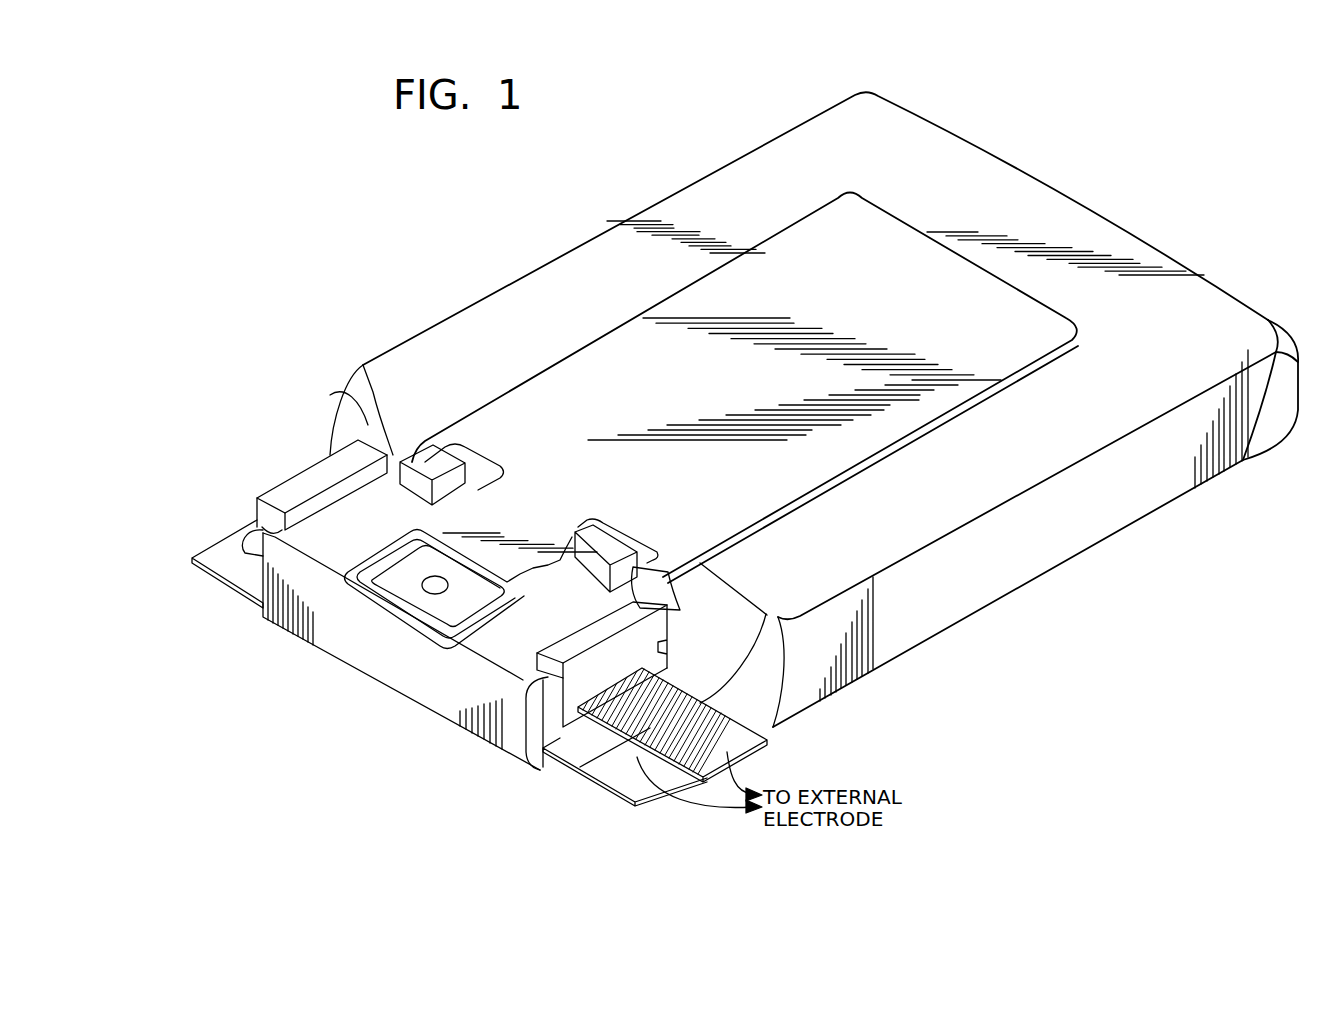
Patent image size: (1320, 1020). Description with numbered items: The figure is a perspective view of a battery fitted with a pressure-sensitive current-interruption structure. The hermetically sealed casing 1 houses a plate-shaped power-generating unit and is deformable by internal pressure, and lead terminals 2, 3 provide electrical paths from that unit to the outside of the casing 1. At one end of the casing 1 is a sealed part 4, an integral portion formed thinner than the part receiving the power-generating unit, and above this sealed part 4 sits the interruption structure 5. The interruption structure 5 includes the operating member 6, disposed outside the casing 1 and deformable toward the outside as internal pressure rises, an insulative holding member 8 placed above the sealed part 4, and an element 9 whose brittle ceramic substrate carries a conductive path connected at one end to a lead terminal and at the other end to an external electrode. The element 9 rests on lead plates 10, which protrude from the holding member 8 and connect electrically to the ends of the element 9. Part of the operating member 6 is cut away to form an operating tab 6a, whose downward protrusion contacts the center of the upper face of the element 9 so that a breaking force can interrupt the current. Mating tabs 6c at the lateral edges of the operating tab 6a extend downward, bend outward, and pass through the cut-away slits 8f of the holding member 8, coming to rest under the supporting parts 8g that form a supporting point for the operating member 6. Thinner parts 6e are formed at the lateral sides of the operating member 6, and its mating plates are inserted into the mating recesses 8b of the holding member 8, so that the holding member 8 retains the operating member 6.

The casing 1 is at (1075, 230).
The lead terminal 2 is at (246, 576).
The lead terminal 3 is at (610, 774).
The sealed part 4 is at (638, 787).
The interruption structure 5 is at (377, 641).
The operating member 6 is at (585, 374).
The operating tab 6a is at (478, 607).
The mating tab 6c is at (460, 506).
The thinner part 6e is at (408, 440).
The holding member 8 is at (280, 481).
The mating recess 8b is at (323, 510).
The cut-away slit 8f is at (392, 458).
The supporting part 8g is at (460, 459).
The element 9 is at (427, 622).
The lead plate 10 is at (597, 719).